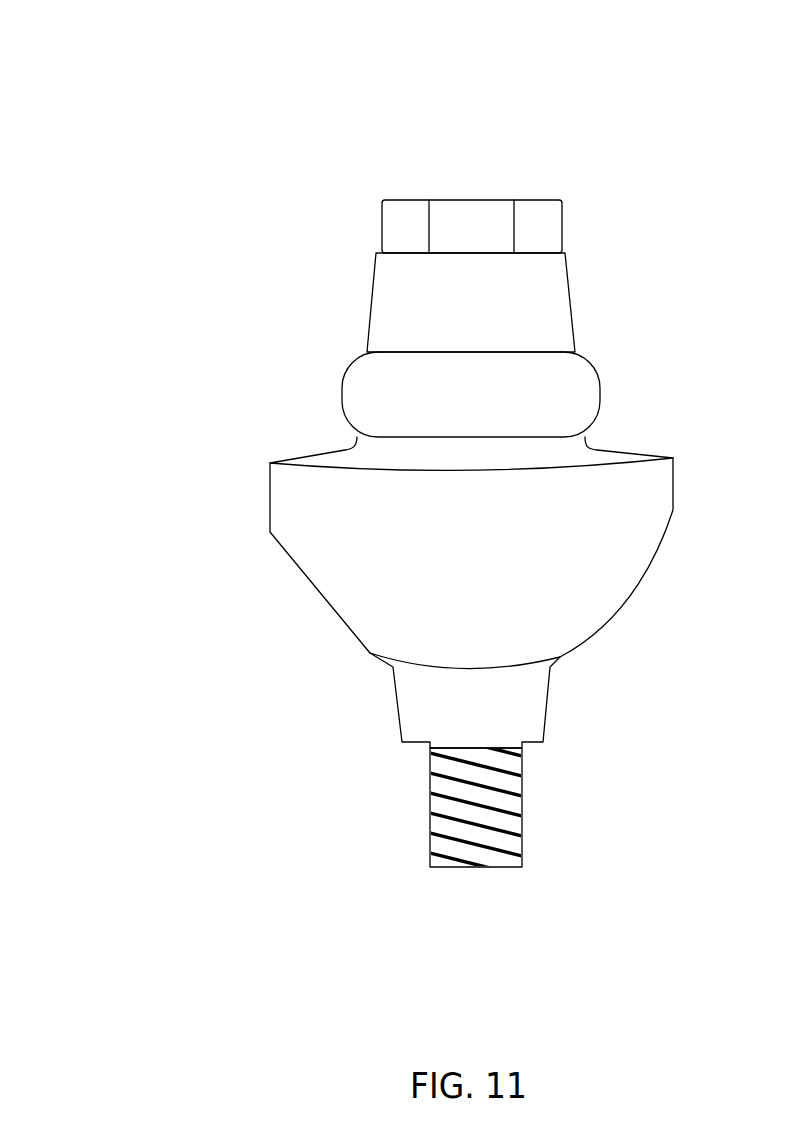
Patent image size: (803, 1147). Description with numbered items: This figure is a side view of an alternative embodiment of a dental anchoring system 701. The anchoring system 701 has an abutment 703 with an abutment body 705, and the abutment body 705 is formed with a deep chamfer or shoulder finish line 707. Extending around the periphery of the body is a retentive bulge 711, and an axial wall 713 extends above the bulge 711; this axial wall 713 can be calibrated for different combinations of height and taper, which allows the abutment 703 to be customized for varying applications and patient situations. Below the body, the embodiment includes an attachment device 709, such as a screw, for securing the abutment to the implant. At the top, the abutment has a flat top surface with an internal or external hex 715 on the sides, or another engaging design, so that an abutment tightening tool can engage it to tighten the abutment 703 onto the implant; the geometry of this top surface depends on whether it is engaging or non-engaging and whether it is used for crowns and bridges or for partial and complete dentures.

The anchoring system 701 is at (143, 70).
The abutment 703 is at (194, 388).
The abutment body 705 is at (318, 597).
The deep chamfer or shoulder finish line 707 is at (627, 453).
The attachment device 709 is at (428, 828).
The retentive bulge 711 is at (343, 367).
The axial wall 713 is at (372, 282).
The hex 715 is at (382, 212).